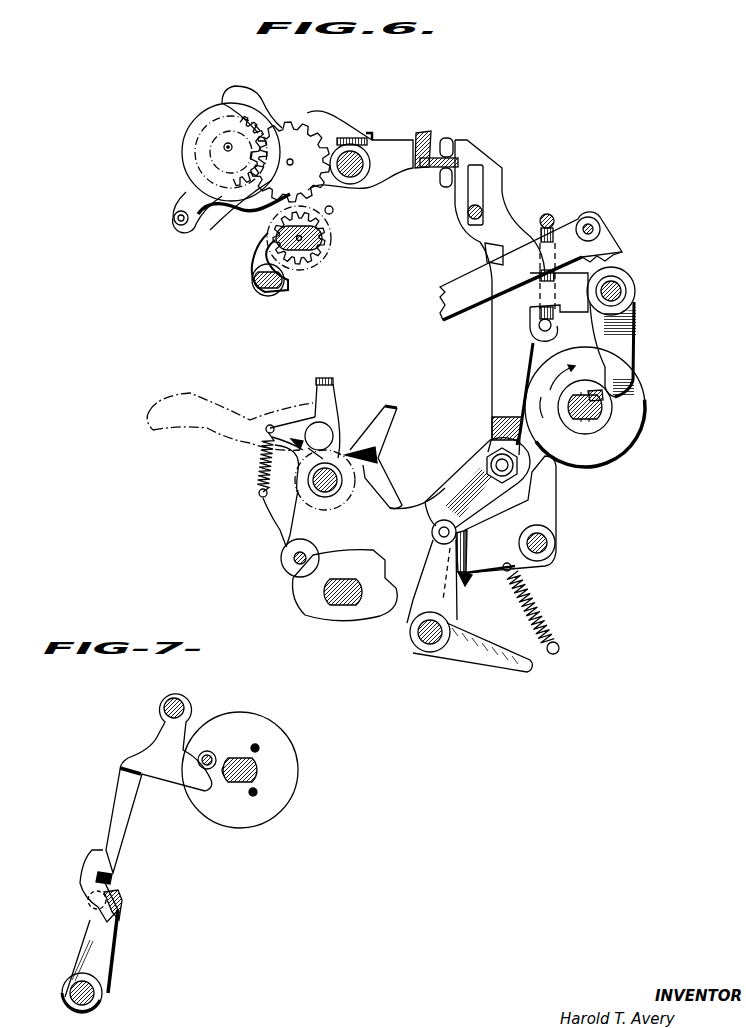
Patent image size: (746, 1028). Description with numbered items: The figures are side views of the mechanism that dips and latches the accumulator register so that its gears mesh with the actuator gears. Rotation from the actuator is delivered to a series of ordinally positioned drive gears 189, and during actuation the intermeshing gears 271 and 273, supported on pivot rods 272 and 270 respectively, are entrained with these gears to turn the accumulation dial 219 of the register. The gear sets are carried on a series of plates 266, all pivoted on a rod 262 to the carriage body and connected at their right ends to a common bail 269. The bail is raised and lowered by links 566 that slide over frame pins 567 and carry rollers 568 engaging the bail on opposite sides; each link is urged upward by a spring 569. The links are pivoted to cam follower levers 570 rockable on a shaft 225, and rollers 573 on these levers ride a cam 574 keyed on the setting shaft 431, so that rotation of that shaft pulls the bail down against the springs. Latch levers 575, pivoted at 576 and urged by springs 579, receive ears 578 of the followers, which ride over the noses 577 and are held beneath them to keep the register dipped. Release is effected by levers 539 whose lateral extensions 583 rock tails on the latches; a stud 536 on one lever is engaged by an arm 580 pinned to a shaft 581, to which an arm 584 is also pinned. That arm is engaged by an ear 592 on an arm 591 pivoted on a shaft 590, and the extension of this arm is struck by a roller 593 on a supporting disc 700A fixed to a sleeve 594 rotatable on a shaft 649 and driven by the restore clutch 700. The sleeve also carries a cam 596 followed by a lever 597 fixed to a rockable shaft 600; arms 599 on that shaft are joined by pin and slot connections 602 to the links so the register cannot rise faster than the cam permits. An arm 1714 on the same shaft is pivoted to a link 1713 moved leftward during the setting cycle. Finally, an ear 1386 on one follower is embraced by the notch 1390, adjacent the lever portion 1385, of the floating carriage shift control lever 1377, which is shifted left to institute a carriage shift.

In FIG. 6, the drive gears 189 is at (325, 228).
In FIG. 6, the disc 219 is at (184, 156).
In FIG. 6, the shaft 225 is at (328, 478).
In FIG. 6, the rod 262 is at (176, 222).
In FIG. 6, the plates 266 is at (196, 188).
In FIG. 6, the bail 269 is at (424, 132).
In FIG. 6, the pivot rod 270 is at (226, 146).
In FIG. 6, the gear 271 is at (270, 181).
In FIG. 6, the pivot rod 272 is at (289, 164).
In FIG. 6, the gear 273 is at (240, 170).
In FIG. 6, the setting shaft 431 is at (330, 601).
In FIG. 6, the stud 536 is at (440, 520).
In FIG. 7, the stud 536 is at (80, 912).
In FIG. 6, the levers 539 is at (420, 580).
In FIG. 6, the links 566 is at (492, 348).
In FIG. 6, the pins 567 is at (481, 210).
In FIG. 6, the rollers 568 is at (450, 140).
In FIG. 6, the spring 569 is at (553, 223).
In FIG. 6, the cam follower levers 570 is at (400, 475).
In FIG. 6, the rollers 573 is at (290, 533).
In FIG. 6, the cam 574 is at (293, 596).
In FIG. 6, the latch levers 575 is at (556, 500).
In FIG. 6, the pivot 576 is at (556, 543).
In FIG. 6, the noses 577 is at (532, 470).
In FIG. 6, the ears 578 is at (500, 430).
In FIG. 6, the springs 579 is at (545, 604).
In FIG. 6, the arm 580 is at (468, 542).
In FIG. 7, the arm 580 is at (121, 908).
In FIG. 6, the shaft 581 is at (432, 650).
In FIG. 7, the shaft 581 is at (102, 993).
In FIG. 6, the lateral extensions 583 is at (470, 585).
In FIG. 7, the arm 584 is at (82, 877).
In FIG. 7, the shaft 590 is at (163, 705).
In FIG. 7, the arm 591 is at (124, 828).
In FIG. 7, the ear 592 is at (113, 878).
In FIG. 7, the roller 593 is at (210, 752).
In FIG. 6, the sleeve 594 is at (605, 396).
In FIG. 7, the sleeve 594 is at (232, 778).
In FIG. 6, the cam 596 is at (645, 432).
In FIG. 6, the cam follower lever 597 is at (636, 360).
In FIG. 6, the arms 599 is at (556, 322).
In FIG. 6, the rockable shaft 600 is at (623, 291).
In FIG. 6, the pin and slot connections 602 is at (485, 256).
In FIG. 6, the shaft 649 is at (600, 407).
In FIG. 7, the shaft 649 is at (240, 784).
In FIG. 6, the restore clutch 700 is at (632, 378).
In FIG. 7, the supporting disc 700A is at (280, 740).
In FIG. 6, the floating carriage shift control lever 1377 is at (205, 432).
In FIG. 6, the lever 1385 is at (317, 392).
In FIG. 6, the ear 1386 is at (328, 379).
In FIG. 6, the notch 1390 is at (340, 396).
In FIG. 6, the link 1713 is at (441, 298).
In FIG. 6, the arm 1714 is at (612, 240).